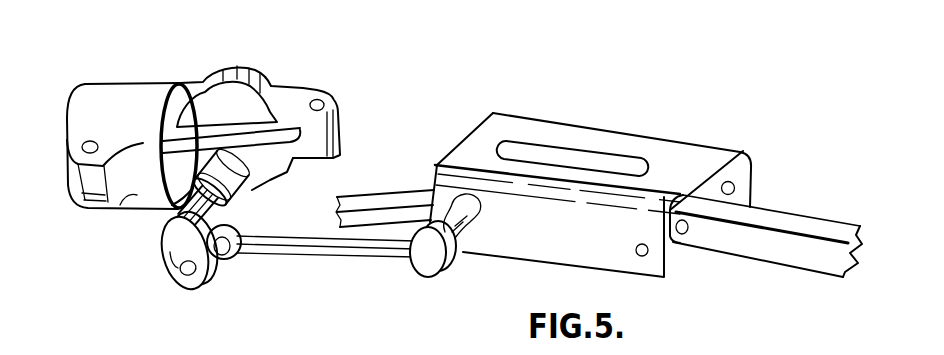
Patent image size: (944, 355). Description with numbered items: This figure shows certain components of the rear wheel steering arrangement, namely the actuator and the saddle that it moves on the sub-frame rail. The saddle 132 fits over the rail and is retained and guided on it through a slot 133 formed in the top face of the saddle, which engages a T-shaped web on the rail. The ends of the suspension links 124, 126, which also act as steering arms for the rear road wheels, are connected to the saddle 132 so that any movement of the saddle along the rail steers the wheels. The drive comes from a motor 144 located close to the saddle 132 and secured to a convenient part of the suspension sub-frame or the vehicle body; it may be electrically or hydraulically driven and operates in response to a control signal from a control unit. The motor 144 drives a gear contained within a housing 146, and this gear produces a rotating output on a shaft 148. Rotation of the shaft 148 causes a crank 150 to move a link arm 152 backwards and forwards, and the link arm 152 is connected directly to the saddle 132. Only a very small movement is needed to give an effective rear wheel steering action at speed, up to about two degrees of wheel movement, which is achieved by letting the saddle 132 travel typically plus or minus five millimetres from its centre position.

The suspension link 124 is at (783, 258).
The suspension link 126 is at (394, 200).
The saddle 132 is at (593, 168).
The slot 133 is at (517, 150).
The motor 144 is at (122, 98).
The housing 146 is at (262, 86).
The shaft 148 is at (176, 212).
The crank 150 is at (170, 268).
The link arm 152 is at (327, 252).